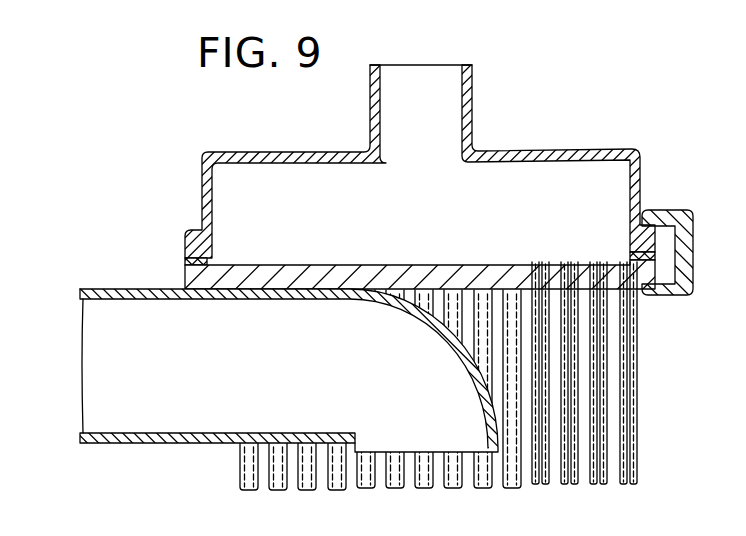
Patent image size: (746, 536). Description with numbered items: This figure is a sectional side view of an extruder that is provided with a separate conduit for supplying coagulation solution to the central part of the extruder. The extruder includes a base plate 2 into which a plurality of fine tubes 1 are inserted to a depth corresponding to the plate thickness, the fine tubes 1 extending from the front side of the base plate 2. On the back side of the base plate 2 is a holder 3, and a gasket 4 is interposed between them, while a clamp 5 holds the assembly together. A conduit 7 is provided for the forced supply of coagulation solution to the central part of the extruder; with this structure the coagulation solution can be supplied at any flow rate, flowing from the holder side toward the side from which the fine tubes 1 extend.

The fine tube 1 is at (242, 465).
The base plate 2 is at (193, 280).
The holder 3 is at (203, 160).
The gasket 4 is at (204, 263).
The clamp 5 is at (676, 210).
The conduit 7 is at (91, 310).